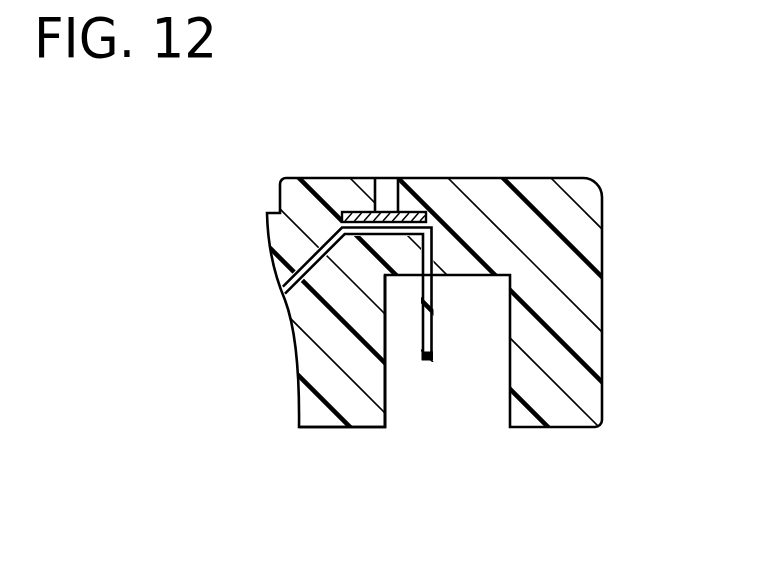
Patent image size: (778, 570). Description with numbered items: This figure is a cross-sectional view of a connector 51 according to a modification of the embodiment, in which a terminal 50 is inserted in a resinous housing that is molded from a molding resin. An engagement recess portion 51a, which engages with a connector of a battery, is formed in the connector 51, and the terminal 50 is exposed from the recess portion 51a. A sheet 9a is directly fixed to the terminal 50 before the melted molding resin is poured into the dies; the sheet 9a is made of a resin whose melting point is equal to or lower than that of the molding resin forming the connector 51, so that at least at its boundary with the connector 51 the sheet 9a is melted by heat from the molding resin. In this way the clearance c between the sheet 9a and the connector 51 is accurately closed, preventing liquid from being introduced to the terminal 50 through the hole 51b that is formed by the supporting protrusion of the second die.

The connector 51 is at (592, 245).
The engagement recess portion 51a is at (383, 397).
The hole 51b is at (389, 192).
The terminal 50 is at (427, 323).
The sheet 9a is at (342, 208).
The clearance c is at (360, 204).